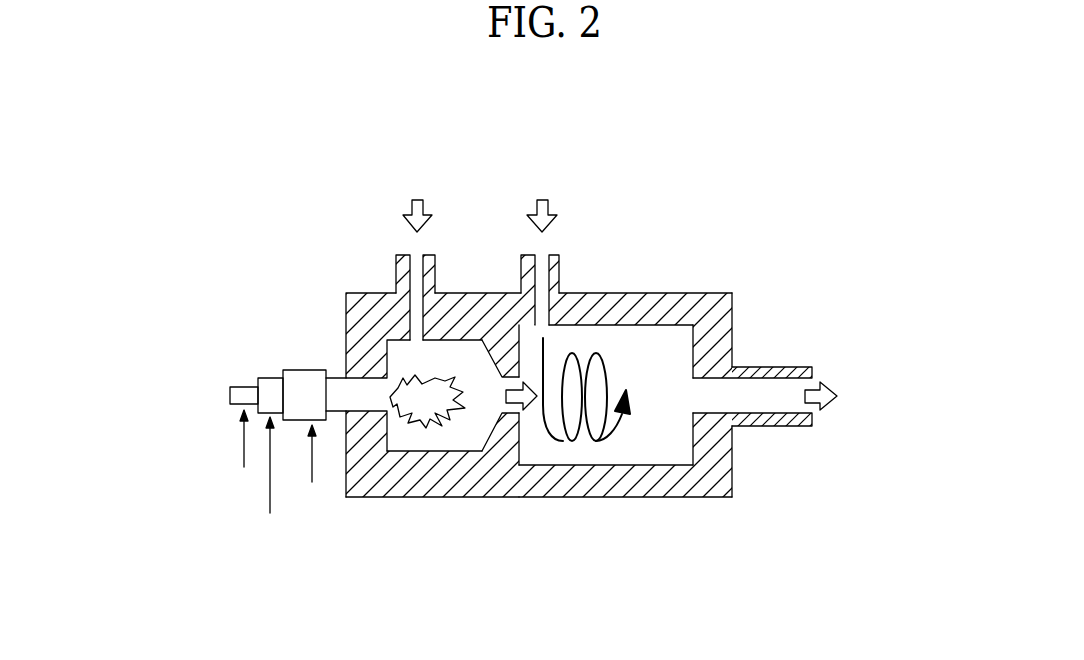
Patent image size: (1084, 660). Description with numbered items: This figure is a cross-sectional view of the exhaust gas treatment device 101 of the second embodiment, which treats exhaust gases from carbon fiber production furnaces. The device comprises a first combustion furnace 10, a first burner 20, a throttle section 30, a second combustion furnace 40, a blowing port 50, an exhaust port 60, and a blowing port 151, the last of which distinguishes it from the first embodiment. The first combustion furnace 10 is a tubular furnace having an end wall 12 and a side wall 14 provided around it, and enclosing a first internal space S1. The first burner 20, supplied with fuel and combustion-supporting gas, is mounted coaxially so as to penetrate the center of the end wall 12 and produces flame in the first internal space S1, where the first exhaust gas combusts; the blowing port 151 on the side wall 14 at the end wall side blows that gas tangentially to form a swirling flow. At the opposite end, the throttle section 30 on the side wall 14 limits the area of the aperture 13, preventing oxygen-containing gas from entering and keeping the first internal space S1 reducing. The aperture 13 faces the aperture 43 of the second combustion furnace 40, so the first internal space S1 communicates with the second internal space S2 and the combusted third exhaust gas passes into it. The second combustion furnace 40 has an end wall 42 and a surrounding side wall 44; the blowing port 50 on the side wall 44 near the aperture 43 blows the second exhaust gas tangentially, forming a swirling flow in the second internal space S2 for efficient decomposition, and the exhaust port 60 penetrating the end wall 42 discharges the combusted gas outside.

The exhaust gas treatment device 101 is at (756, 138).
The first combustion furnace 10 is at (429, 506).
The end wall 12 is at (345, 317).
The aperture 13 is at (503, 440).
The side wall 14 is at (505, 292).
The blowing port (first blowing port) 151 is at (396, 268).
The first burner 20 is at (303, 358).
The throttle portion 30 is at (502, 347).
The second combustion furnace 40 is at (658, 506).
The end wall 42 is at (732, 332).
The aperture 43 is at (537, 453).
The side wall 44 is at (673, 293).
The blowing port (second blowing port) 50 is at (560, 273).
The exhaust port 60 is at (799, 366).
The first internal space S1 is at (393, 438).
The second internal space S2 is at (678, 454).